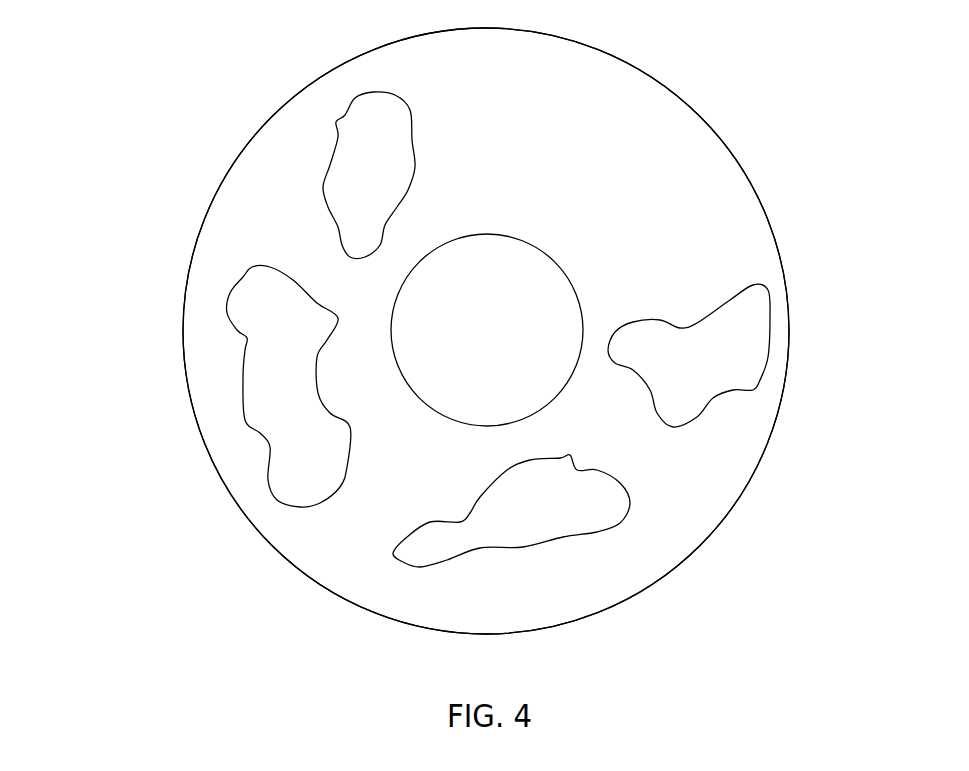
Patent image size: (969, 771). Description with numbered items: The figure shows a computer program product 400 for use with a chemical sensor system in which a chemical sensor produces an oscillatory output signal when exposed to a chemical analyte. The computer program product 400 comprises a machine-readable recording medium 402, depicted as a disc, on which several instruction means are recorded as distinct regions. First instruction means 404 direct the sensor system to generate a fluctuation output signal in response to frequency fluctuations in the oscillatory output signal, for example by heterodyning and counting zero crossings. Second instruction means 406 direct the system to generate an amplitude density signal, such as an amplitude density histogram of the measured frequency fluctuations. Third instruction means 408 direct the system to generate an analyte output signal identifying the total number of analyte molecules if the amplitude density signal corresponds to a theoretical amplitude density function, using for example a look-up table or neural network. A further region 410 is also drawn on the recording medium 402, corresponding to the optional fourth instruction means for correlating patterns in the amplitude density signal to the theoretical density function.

The computer program product 400 is at (140, 97).
The machine-readable recording medium 402 is at (758, 190).
The first instruction means 404 is at (770, 358).
The second instruction means 406 is at (613, 530).
The third instruction means 408 is at (242, 375).
The irregular region (top) 410 is at (342, 120).